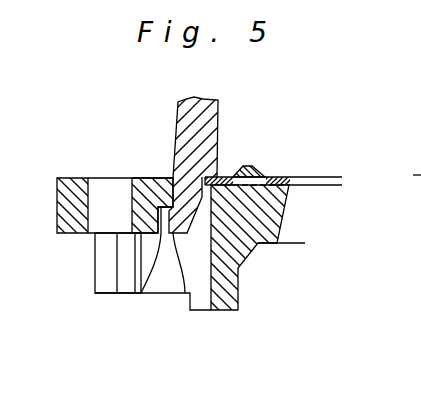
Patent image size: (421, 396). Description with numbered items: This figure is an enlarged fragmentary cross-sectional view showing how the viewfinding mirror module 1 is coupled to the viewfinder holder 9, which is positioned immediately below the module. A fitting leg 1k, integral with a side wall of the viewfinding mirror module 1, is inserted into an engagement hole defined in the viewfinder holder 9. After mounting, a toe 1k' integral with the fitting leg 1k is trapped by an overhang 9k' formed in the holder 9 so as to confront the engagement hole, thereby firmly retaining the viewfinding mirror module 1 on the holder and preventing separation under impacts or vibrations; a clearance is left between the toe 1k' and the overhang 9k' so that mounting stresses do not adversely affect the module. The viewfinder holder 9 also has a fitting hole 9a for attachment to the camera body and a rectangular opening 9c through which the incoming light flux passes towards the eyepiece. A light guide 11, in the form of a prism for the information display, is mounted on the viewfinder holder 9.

The viewfinding mirror module 1 is at (213, 133).
The fitting leg 1k is at (153, 263).
The toe 1k' is at (145, 278).
The viewfinder holder 9 is at (247, 280).
The fitting hole 9a is at (103, 188).
The overhang 9k' is at (153, 170).
The rectangular opening 9c is at (316, 237).
The light guide 11 is at (307, 177).